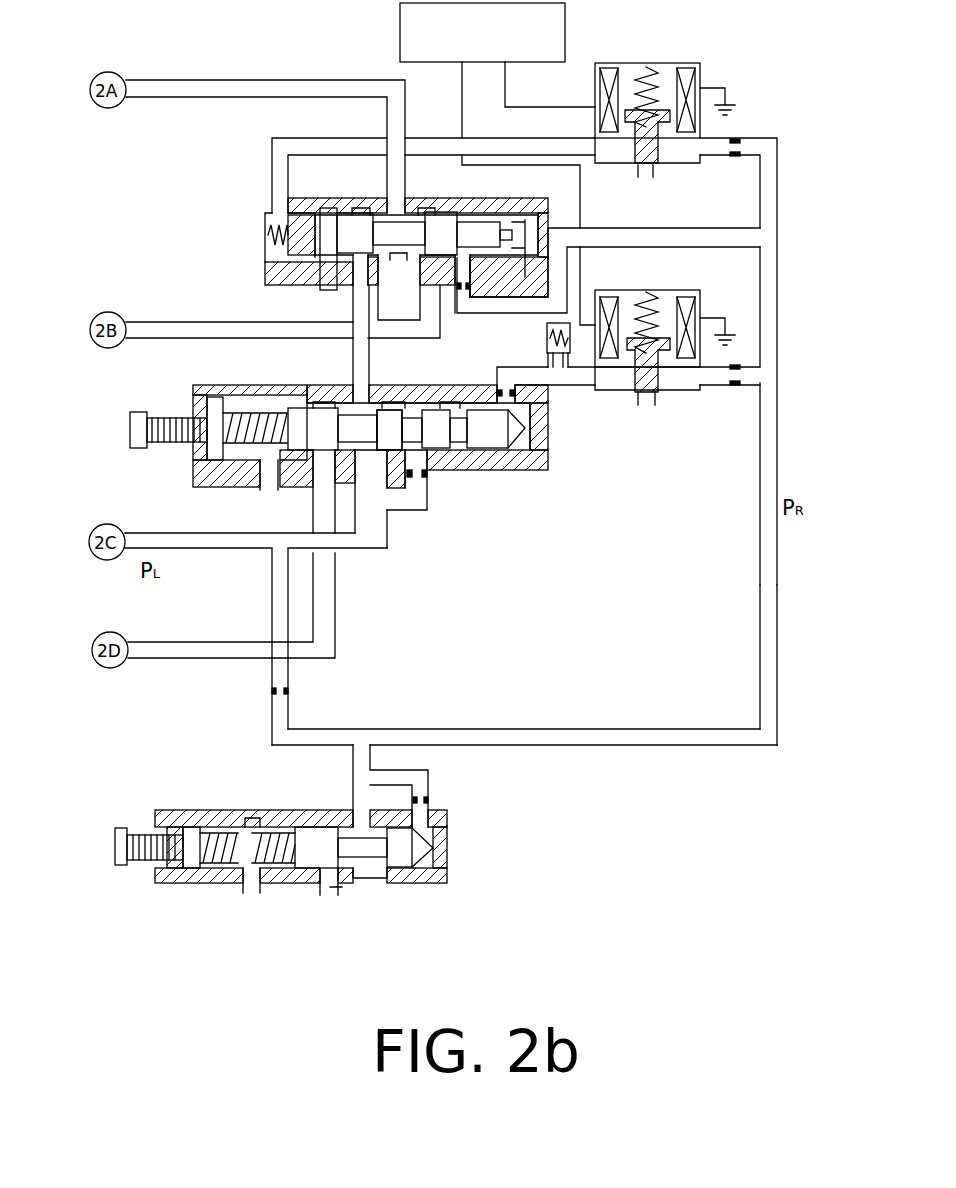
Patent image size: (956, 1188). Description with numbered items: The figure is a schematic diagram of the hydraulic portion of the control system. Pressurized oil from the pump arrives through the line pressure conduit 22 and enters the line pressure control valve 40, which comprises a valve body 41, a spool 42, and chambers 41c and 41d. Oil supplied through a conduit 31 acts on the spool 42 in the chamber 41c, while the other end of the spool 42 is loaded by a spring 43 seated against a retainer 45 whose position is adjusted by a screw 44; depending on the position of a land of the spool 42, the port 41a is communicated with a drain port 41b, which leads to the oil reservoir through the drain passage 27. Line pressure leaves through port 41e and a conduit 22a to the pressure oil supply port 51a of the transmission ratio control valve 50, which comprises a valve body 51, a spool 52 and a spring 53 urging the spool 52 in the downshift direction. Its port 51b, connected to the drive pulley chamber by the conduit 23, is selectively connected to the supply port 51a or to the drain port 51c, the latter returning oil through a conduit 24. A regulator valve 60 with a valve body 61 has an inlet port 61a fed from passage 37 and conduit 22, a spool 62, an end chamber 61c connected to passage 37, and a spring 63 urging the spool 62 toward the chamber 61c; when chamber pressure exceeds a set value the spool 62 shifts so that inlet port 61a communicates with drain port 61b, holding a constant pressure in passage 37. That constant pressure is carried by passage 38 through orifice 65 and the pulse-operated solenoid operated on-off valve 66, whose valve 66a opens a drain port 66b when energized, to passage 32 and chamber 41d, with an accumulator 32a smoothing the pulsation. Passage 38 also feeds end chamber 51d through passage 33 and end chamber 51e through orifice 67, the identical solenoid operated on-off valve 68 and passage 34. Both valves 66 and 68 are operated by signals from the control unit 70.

The control unit 70 is at (565, 30).
The conduit 23 is at (216, 82).
The passage 34 is at (504, 142).
The constant pressure passage 38 is at (760, 586).
The passage 37 is at (321, 735).
The solenoid operated on-off valve 68 is at (698, 63).
The orifice 67 is at (746, 138).
The passage 33 is at (680, 232).
The solenoid operated on-off valve 66 is at (697, 290).
The valve 66a is at (662, 392).
The drain port 66b is at (644, 405).
The orifice 65 is at (736, 390).
The passage 32 is at (566, 355).
The accumulator 32a is at (535, 405).
The transmission ratio control valve 50 is at (388, 253).
The valve body 51 is at (445, 213).
The end chamber 51e is at (290, 255).
The spring 53 is at (268, 225).
The spool 52 is at (340, 222).
The port 51b is at (390, 210).
The pressure oil supply port 51a is at (345, 286).
The drain port 51c is at (404, 296).
The end chamber 51d is at (478, 290).
The conduit 22a is at (353, 305).
The conduit 24 is at (238, 333).
The line pressure control valve 40 is at (349, 467).
The valve body 41 is at (474, 395).
The retainer 45 is at (213, 462).
The screw 44 is at (140, 448).
The spring 43 is at (262, 413).
The port 41e is at (360, 400).
The spool 42 is at (393, 412).
The drain port 41b is at (320, 480).
The port 41a is at (385, 520).
The chamber 41c is at (428, 470).
The chamber 41d is at (525, 458).
The conduit 31 is at (420, 512).
The line pressure conduit 22 is at (177, 533).
The drain passage 27 is at (193, 645).
The regulator valve 60 is at (317, 837).
The valve body 61 is at (218, 883).
The spring 63 is at (253, 818).
The spool 62 is at (313, 862).
The inlet port 61a is at (355, 812).
The drain port 61b is at (343, 888).
The end chamber 61c is at (430, 868).